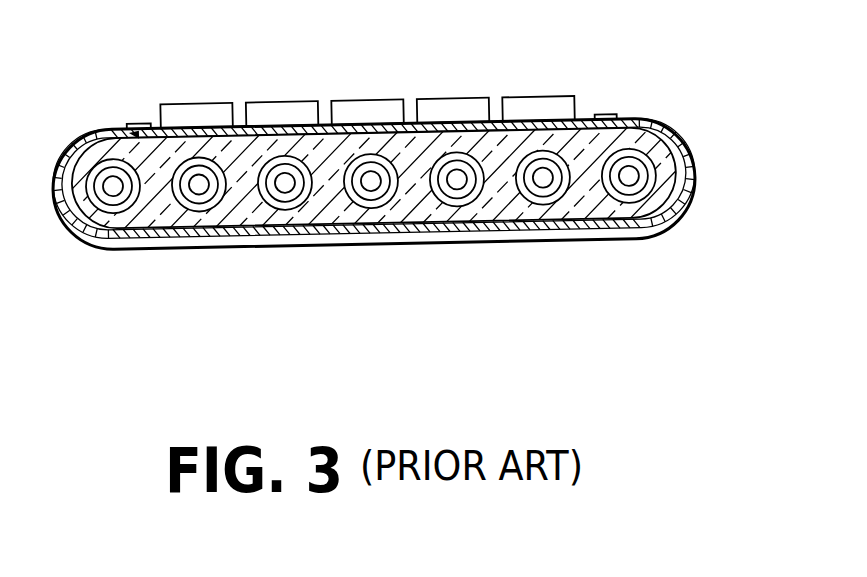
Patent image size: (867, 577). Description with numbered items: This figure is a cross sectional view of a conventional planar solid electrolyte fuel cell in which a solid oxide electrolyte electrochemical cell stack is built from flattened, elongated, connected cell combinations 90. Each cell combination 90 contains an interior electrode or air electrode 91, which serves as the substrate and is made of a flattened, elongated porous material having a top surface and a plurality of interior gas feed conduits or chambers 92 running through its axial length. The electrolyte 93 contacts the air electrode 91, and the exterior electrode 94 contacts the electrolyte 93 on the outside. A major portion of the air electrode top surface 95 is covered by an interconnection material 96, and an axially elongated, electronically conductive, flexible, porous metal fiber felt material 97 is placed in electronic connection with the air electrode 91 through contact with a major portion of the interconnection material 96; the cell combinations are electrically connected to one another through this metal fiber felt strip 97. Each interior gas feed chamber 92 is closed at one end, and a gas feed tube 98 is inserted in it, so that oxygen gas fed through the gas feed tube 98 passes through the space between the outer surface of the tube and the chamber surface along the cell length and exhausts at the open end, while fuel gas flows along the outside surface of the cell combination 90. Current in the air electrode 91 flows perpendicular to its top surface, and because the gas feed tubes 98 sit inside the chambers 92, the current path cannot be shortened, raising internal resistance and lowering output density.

The cell combination 90 is at (74, 124).
The air electrode 91 is at (487, 217).
The interior gas feed chamber 92 is at (552, 202).
The electrolyte 93 is at (365, 243).
The exterior electrode 94 is at (686, 147).
The air electrode top surface 95 is at (157, 130).
The interconnection material 96 is at (590, 122).
The metal fiber felt material 97 is at (433, 103).
The gas feed tube 98 is at (283, 208).